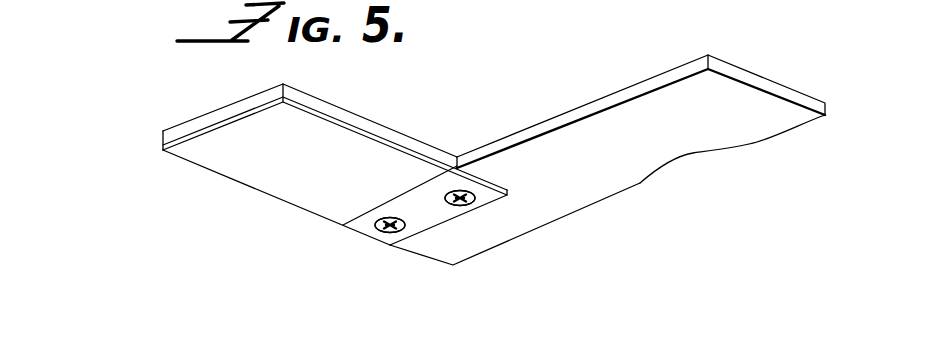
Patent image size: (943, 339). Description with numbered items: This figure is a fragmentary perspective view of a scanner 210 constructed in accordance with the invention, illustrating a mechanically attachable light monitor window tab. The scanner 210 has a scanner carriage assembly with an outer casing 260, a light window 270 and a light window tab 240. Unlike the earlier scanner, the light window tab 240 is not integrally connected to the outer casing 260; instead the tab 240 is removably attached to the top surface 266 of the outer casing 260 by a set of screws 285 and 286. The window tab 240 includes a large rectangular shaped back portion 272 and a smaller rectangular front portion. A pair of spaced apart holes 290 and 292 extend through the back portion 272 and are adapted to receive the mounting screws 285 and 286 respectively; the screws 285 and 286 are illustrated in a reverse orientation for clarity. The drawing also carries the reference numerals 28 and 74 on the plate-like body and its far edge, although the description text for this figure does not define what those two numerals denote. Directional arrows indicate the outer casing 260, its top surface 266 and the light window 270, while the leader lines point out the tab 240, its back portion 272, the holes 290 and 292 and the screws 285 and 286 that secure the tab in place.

The scanner 210 is at (467, 155).
The mounting plate 28 is at (335, 162).
The plate edge 74 is at (356, 118).
The light window tab 240 is at (585, 151).
The screw 286 is at (461, 191).
The hole 292 is at (477, 198).
The hole 290 is at (375, 225).
The screw 285 is at (388, 233).
The back portion 272 is at (712, 148).
The outer casing 260 is at (177, 200).
The top surface 266 is at (800, 150).
The light window 270 is at (657, 232).